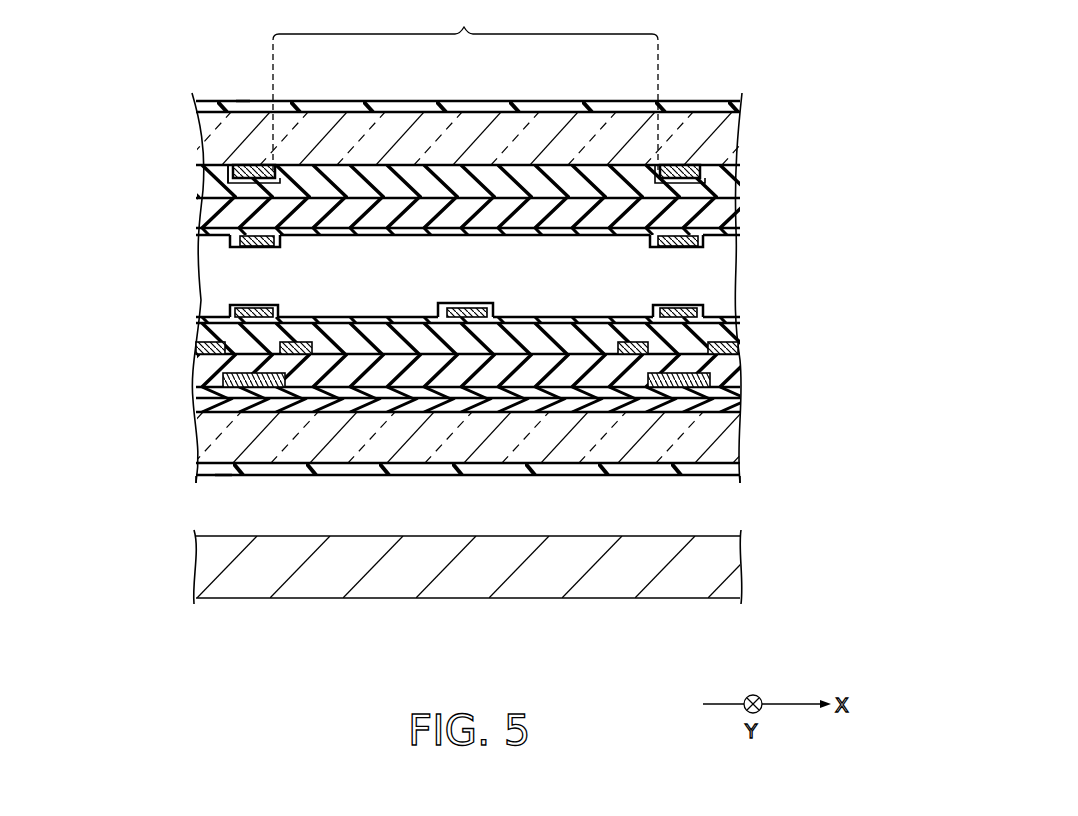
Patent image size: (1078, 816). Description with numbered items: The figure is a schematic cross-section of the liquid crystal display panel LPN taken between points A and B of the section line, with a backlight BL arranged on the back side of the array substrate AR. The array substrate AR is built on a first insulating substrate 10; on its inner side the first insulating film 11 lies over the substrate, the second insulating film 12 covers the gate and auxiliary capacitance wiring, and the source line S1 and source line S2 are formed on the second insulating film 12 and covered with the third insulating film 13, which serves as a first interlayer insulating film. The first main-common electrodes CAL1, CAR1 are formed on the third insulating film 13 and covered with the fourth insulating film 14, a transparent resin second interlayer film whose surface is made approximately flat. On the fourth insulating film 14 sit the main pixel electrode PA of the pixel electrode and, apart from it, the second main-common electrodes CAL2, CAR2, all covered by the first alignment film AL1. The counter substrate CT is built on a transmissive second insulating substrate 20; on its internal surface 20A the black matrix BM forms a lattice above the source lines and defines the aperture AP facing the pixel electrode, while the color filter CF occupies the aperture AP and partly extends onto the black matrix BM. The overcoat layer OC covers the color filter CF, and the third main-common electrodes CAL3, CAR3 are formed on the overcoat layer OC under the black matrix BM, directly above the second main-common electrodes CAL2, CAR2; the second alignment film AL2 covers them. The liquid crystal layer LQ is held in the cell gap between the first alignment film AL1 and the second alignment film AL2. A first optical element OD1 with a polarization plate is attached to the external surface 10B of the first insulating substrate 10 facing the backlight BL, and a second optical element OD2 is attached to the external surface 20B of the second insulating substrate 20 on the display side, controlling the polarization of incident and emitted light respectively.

The aperture AP is at (465, 85).
The external surface of the counter substrate 20B is at (242, 103).
The liquid crystal display panel LPN is at (750, 72).
The counter substrate CT is at (194, 142).
The second optical element OD2 is at (738, 104).
The second insulating substrate 20 is at (738, 134).
The internal surface of the second insulating substrate 20A is at (227, 173).
The black matrix BM is at (232, 203).
The color filter CF is at (738, 186).
The overcoat layer OC is at (738, 210).
The second alignment film AL2 is at (720, 237).
The third main-common electrode CAL3 is at (240, 249).
The third main-common electrode CAR3 is at (698, 250).
The second main-common electrode CAL2 is at (236, 305).
The main pixel electrode PA is at (462, 305).
The second main-common electrode CAR2 is at (665, 305).
The liquid crystal layer LQ is at (725, 288).
The first alignment film AL1 is at (712, 310).
The fourth insulating film 14 is at (730, 334).
The third insulating film 13 is at (732, 366).
The second insulating film 12 is at (738, 388).
The first insulating film 11 is at (738, 404).
The first insulating substrate 10 is at (732, 440).
The array substrate AR is at (189, 442).
The line A-B end point A is at (183, 485).
The line A-B end point B is at (752, 472).
The external surface of the array substrate 10B is at (222, 471).
The source line S1 is at (252, 388).
The first main-common electrode CAL1 is at (308, 356).
The first main-common electrode CAR1 is at (625, 356).
The source line S2 is at (686, 388).
The first optical element OD1 is at (713, 477).
The backlight BL is at (733, 564).